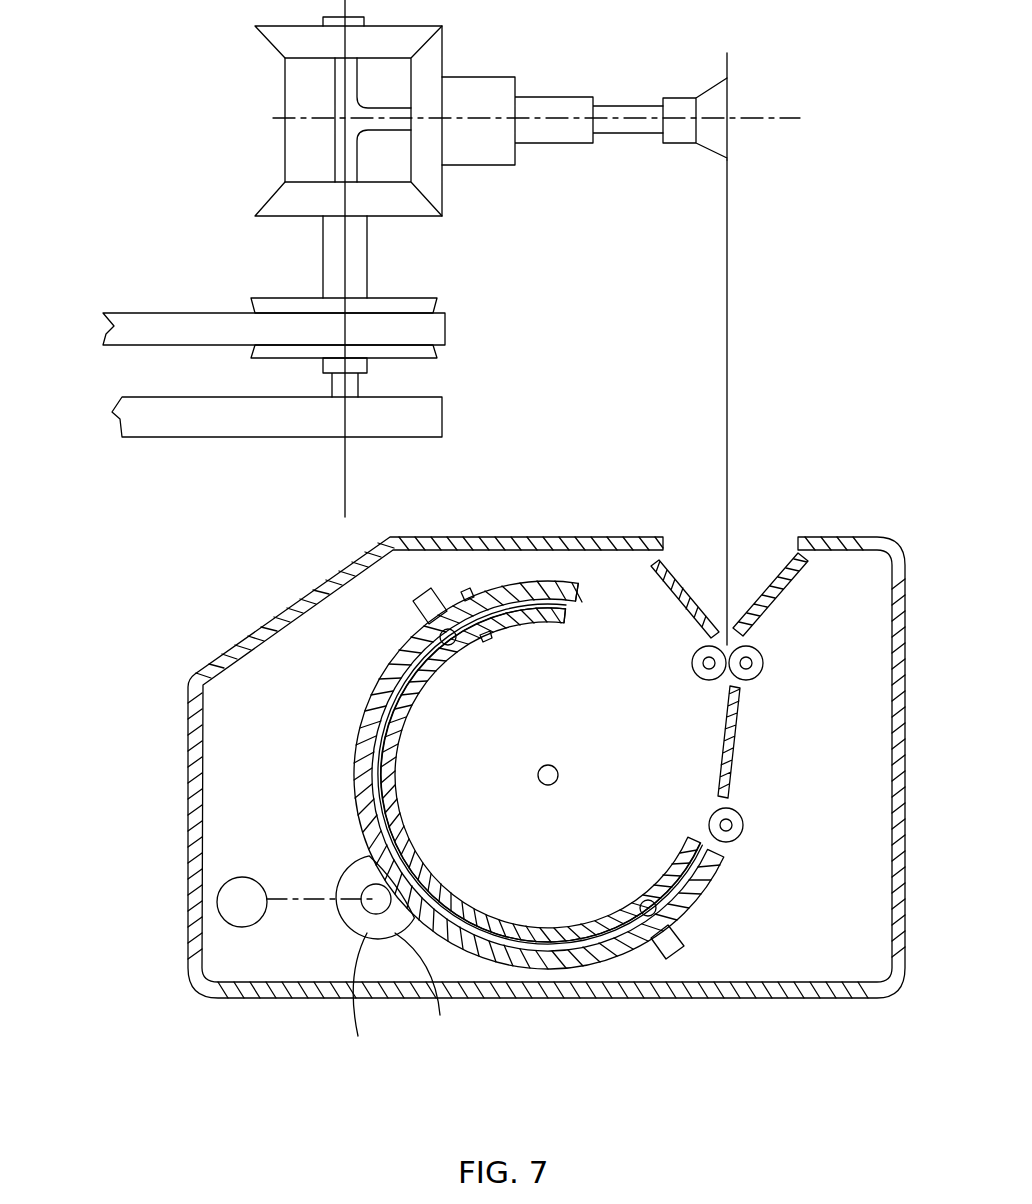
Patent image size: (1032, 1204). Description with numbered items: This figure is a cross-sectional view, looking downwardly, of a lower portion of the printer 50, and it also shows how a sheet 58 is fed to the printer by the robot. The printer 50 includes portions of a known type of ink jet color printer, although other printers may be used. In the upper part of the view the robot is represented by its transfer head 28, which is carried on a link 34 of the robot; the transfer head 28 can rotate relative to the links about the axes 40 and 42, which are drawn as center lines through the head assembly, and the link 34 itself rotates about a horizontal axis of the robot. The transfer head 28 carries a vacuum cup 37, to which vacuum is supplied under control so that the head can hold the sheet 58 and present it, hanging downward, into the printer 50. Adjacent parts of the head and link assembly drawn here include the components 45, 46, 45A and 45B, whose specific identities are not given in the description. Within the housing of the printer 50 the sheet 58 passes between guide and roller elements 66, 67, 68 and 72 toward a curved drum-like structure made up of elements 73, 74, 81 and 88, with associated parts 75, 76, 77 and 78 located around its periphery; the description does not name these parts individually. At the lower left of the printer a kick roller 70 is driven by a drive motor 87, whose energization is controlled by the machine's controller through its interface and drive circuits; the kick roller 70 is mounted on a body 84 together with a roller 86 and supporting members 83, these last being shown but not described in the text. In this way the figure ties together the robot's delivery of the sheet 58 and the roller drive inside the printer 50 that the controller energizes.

The transfer head 28 is at (488, 153).
The link 34 is at (220, 430).
The vacuum cup 37 is at (708, 92).
The axis 40 is at (345, 472).
The axis 42 is at (747, 122).
The spool hub 45 is at (275, 195).
The spool flange 46 is at (275, 47).
The mounting plate 45A is at (145, 318).
The pulley 45B is at (432, 350).
The printer 50 is at (820, 505).
The sheet 58 is at (730, 376).
The guide plates 66 is at (733, 623).
The feed roller 67 is at (708, 677).
The feed roller 68 is at (755, 670).
The kick roller 70 is at (359, 1003).
The guide roller 72 is at (742, 820).
The inner ring band 73 is at (673, 867).
The outer ring 74 is at (718, 878).
The roller 75 is at (638, 906).
The roller 76 is at (457, 645).
The tab 77 is at (682, 945).
The tab 78 is at (418, 598).
The ring end 81 is at (582, 597).
The support arm 83 is at (432, 991).
The cam body 84 is at (355, 868).
The drive roller 86 is at (360, 918).
The drive motor 87 is at (250, 877).
The liner ring 88 is at (510, 615).